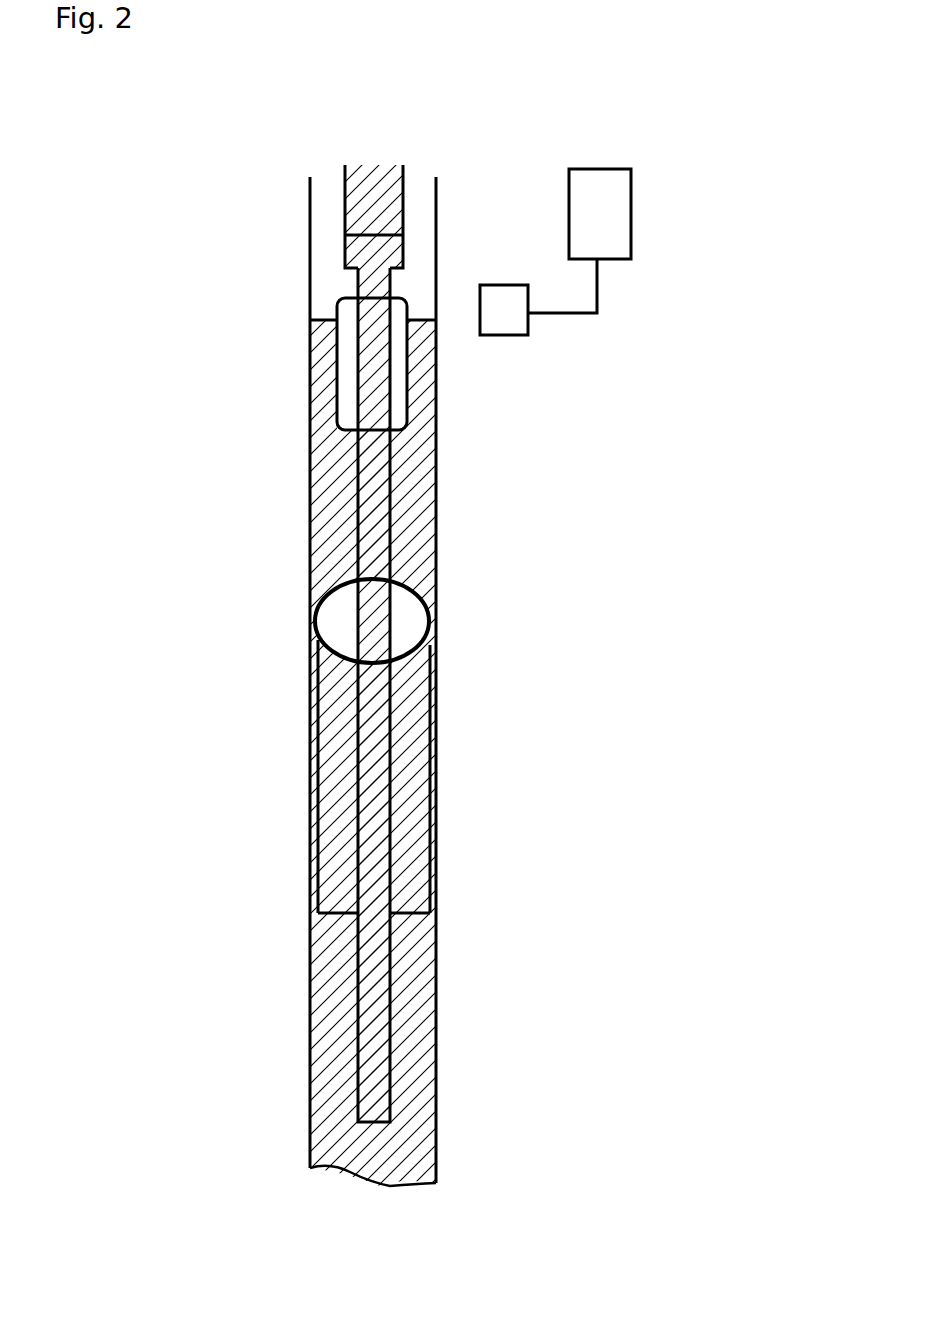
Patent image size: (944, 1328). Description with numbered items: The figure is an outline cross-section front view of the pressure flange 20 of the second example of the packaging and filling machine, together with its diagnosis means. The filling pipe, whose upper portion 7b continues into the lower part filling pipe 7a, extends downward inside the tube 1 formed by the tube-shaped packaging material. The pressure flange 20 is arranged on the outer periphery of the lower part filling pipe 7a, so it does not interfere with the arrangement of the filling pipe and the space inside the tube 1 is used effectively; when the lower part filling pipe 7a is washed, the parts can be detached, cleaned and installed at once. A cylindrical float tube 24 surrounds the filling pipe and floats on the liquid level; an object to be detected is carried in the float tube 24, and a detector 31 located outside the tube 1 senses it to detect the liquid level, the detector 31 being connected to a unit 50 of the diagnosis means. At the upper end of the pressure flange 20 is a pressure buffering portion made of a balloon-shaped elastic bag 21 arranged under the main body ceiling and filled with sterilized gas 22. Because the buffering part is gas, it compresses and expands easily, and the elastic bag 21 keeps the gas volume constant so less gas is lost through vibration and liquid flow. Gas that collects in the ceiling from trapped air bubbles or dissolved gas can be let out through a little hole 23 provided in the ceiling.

The tube 1 is at (437, 973).
The lower part filling pipe 7a is at (397, 528).
The upper part of thermocouple element 7b is at (403, 203).
The pressure flange 20 is at (433, 772).
The elastic bag 21 is at (432, 667).
The sterilized gas 22 is at (407, 627).
The little hole 23 is at (415, 588).
The float tube 24 is at (412, 378).
The detector 31 is at (528, 335).
The control unit 50 is at (600, 214).